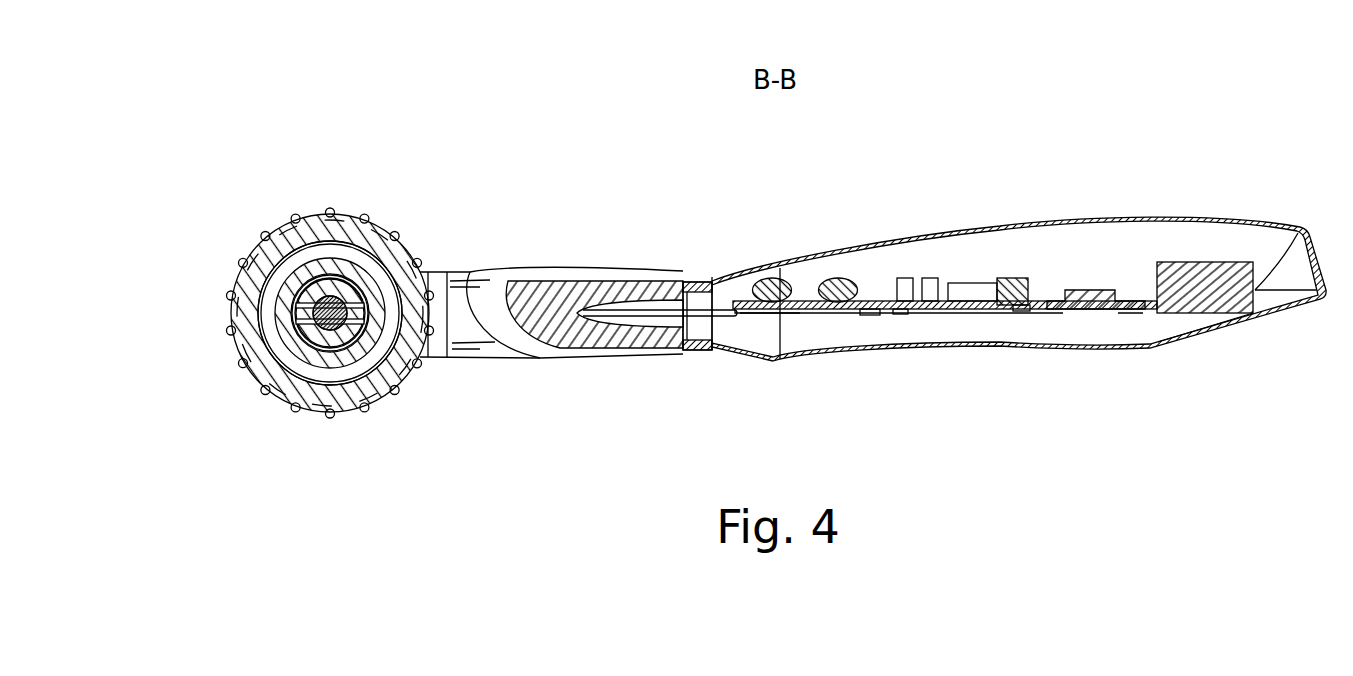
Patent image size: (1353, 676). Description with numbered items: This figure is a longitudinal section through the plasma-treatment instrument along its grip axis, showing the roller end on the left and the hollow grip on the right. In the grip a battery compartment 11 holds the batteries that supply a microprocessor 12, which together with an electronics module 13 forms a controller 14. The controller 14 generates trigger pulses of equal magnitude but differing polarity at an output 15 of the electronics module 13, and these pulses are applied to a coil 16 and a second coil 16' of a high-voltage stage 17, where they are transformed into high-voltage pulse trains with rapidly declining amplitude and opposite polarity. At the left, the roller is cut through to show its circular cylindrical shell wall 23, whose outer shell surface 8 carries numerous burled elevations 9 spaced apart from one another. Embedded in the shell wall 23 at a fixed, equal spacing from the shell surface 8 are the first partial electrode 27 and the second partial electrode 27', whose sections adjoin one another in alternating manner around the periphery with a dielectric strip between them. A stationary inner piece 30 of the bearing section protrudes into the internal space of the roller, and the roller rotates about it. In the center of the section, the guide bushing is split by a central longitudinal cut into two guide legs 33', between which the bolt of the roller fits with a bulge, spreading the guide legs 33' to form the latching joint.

The shell surface 8 is at (295, 228).
The elevations 9 is at (255, 252).
The shell wall 23 is at (340, 240).
The inner piece 30 is at (368, 302).
The guide legs 33' is at (377, 338).
The first partial electrode 27 is at (377, 345).
The second partial electrode 27' is at (372, 359).
The battery compartment 11 is at (1205, 262).
The microprocessor 12 is at (1097, 290).
The electronics module 13 is at (970, 270).
The controller 14 is at (1027, 250).
The output 15 is at (887, 312).
The coil 16 is at (859, 224).
The coil 16' is at (789, 224).
The high-voltage stage 17 is at (800, 313).